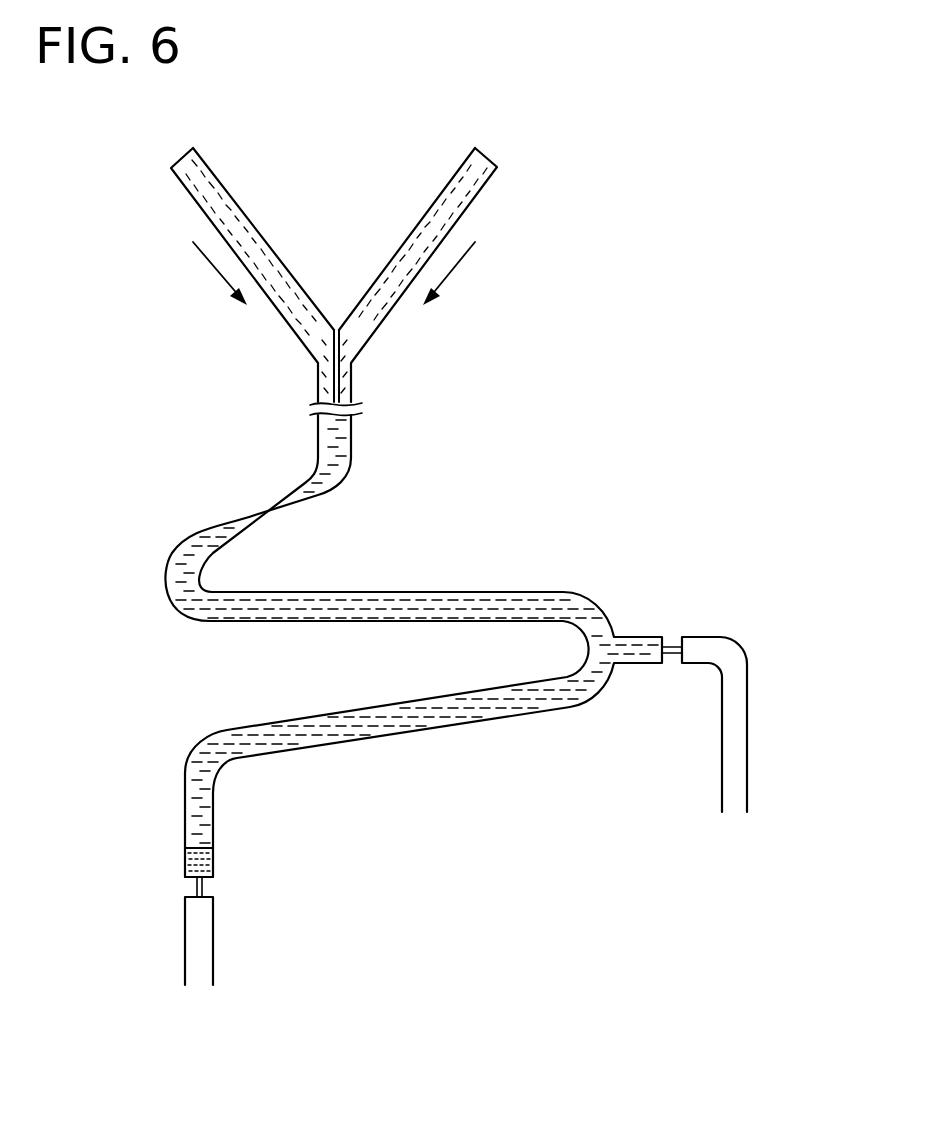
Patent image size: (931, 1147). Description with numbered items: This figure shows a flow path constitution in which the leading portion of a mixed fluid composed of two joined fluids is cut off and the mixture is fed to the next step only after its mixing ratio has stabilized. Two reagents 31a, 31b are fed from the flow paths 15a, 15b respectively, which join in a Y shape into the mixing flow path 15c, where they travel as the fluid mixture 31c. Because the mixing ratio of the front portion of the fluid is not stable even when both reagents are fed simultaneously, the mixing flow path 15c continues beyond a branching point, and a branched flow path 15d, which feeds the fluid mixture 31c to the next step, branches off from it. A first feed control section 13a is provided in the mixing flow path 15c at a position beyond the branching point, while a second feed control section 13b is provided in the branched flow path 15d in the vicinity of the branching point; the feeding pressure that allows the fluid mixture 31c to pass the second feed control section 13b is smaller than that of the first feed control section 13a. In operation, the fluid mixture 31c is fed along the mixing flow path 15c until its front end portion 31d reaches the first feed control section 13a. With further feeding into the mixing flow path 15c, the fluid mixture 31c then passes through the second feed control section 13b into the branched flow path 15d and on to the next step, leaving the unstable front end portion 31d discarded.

The flow path 15a is at (283, 317).
The flow path 15b is at (383, 315).
The mixing flow path 15c is at (413, 640).
The branched flow path 15d is at (747, 713).
The reagent 31a is at (313, 338).
The reagent 31b is at (363, 338).
The fluid mixture 31c is at (385, 603).
The front end portion 31d is at (215, 860).
The first feed control section 13a is at (222, 884).
The second feed control section 13b is at (670, 630).